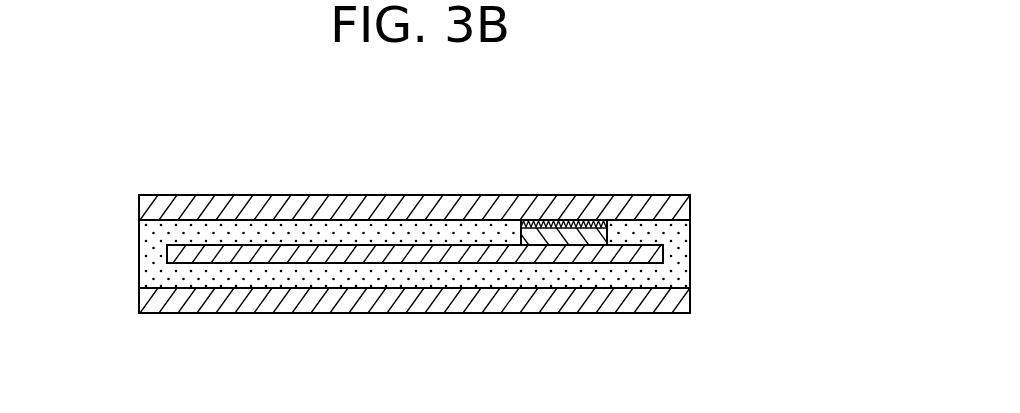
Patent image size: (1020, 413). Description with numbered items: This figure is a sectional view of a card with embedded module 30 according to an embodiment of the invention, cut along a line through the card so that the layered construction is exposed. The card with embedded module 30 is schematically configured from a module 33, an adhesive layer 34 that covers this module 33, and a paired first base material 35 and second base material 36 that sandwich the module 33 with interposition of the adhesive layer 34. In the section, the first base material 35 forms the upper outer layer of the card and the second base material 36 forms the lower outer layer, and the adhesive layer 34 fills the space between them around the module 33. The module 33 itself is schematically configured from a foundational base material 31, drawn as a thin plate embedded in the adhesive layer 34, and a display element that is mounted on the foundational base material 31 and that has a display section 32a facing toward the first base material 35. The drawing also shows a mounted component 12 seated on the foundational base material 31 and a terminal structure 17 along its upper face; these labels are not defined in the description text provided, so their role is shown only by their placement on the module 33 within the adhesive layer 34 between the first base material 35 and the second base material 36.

The card with embedded module 30 is at (695, 155).
The first base material 35 is at (677, 207).
The second base material 36 is at (655, 300).
The foundational base material 31 is at (650, 253).
The module 33 is at (651, 243).
The adhesive layer 34 is at (677, 276).
The electronic component 12 is at (565, 220).
The connection terminal 17 is at (598, 219).
The display section 32a is at (537, 220).